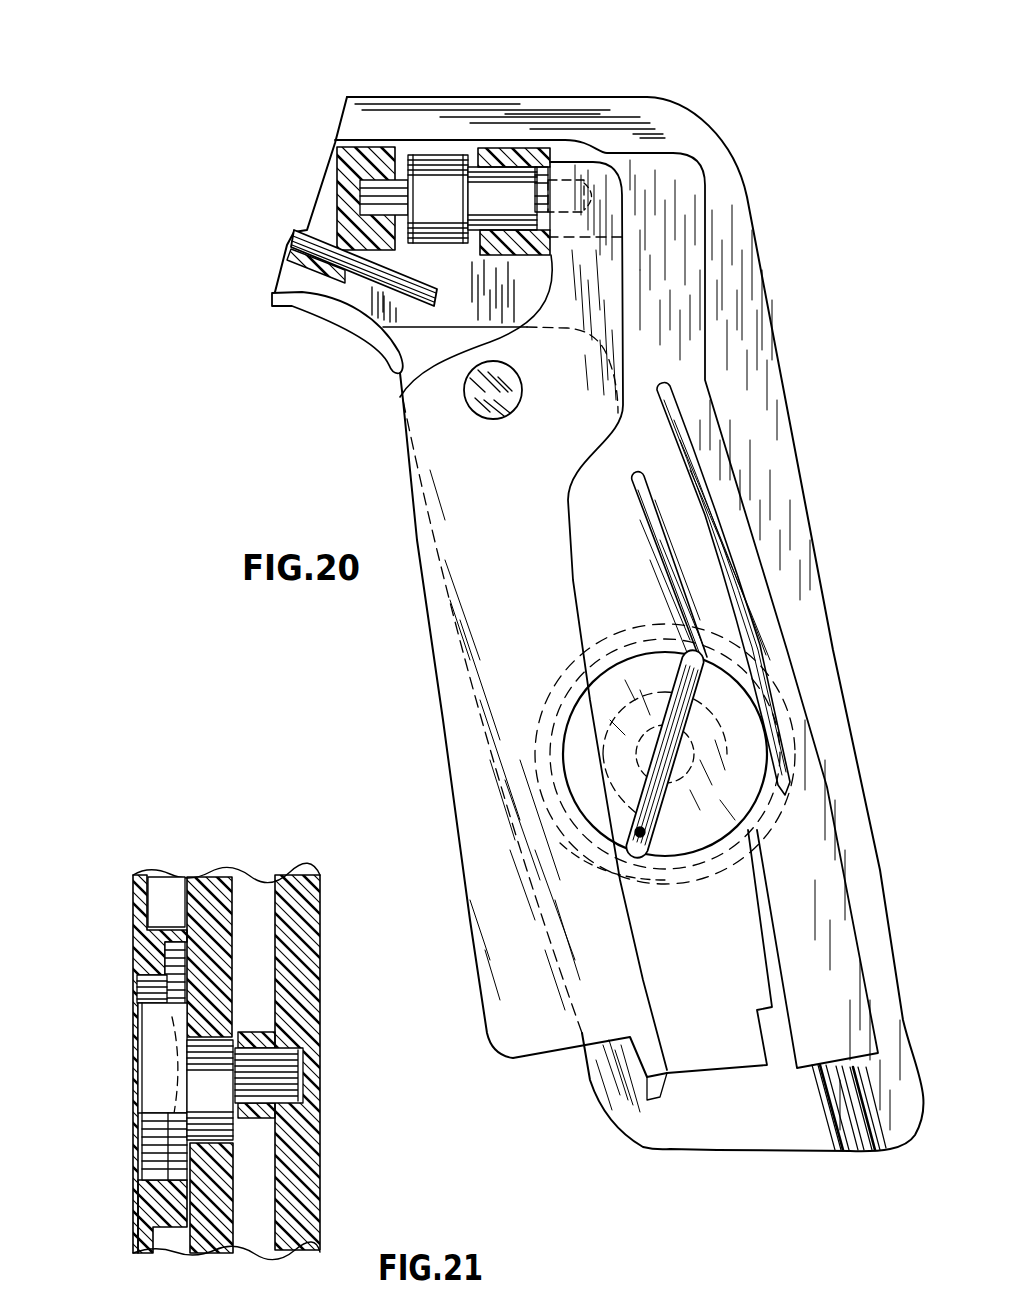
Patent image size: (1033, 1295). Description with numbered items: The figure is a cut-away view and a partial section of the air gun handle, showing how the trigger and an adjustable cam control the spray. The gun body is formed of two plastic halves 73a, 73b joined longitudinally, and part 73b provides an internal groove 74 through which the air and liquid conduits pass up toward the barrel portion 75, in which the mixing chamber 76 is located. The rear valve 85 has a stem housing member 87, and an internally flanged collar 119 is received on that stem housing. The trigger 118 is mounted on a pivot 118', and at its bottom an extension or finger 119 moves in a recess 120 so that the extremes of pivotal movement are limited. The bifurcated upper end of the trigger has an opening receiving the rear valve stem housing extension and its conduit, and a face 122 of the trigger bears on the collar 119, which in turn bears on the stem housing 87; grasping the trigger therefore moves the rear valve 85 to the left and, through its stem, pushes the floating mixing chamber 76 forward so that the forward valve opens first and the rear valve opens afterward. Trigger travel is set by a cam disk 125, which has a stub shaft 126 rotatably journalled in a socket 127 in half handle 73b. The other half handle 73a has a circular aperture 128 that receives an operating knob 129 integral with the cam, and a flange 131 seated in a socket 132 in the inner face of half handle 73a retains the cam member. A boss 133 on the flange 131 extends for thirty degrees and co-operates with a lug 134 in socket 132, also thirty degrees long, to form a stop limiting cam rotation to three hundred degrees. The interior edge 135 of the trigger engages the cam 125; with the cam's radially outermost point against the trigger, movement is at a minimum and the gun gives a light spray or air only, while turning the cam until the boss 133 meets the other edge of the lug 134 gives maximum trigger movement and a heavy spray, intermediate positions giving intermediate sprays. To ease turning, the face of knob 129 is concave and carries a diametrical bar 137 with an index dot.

In FIG. 21, the half handle 73a is at (138, 915).
In FIG. 20, the half handle 73b is at (647, 95).
In FIG. 21, the half handle 73b is at (313, 968).
In FIG. 20, the internal groove 74 is at (873, 992).
In FIG. 20, the barrel portion 75 is at (373, 115).
In FIG. 20, the mixing chamber 76 is at (322, 273).
In FIG. 20, the rear valve 85 is at (440, 173).
In FIG. 20, the stem housing member 87 is at (507, 187).
In FIG. 20, the trigger 118 is at (516, 736).
In FIG. 20, the pivot 118' is at (427, 395).
In FIG. 20, the extension or finger 119 is at (542, 147).
In FIG. 20, the recess 120 is at (655, 1090).
In FIG. 20, the face 122 is at (528, 167).
In FIG. 20, the cam disk 125 is at (560, 843).
In FIG. 21, the cam disk 125 is at (237, 1163).
In FIG. 20, the stub shaft 126 is at (635, 657).
In FIG. 21, the stub shaft 126 is at (302, 1090).
In FIG. 21, the socket 127 is at (302, 1060).
In FIG. 21, the circular aperture 128 is at (163, 1167).
In FIG. 20, the operating knob 129 is at (752, 745).
In FIG. 21, the operating knob 129 is at (150, 1033).
In FIG. 21, the flange 131 is at (180, 960).
In FIG. 21, the socket 132 is at (158, 905).
In FIG. 20, the boss 133 is at (775, 850).
In FIG. 21, the boss 133 is at (177, 1178).
In FIG. 20, the lug 134 is at (783, 800).
In FIG. 20, the interior edge 135 is at (593, 768).
In FIG. 20, the diametrical bar 137 is at (700, 687).
In FIG. 21, the diametrical bar 137 is at (152, 1093).